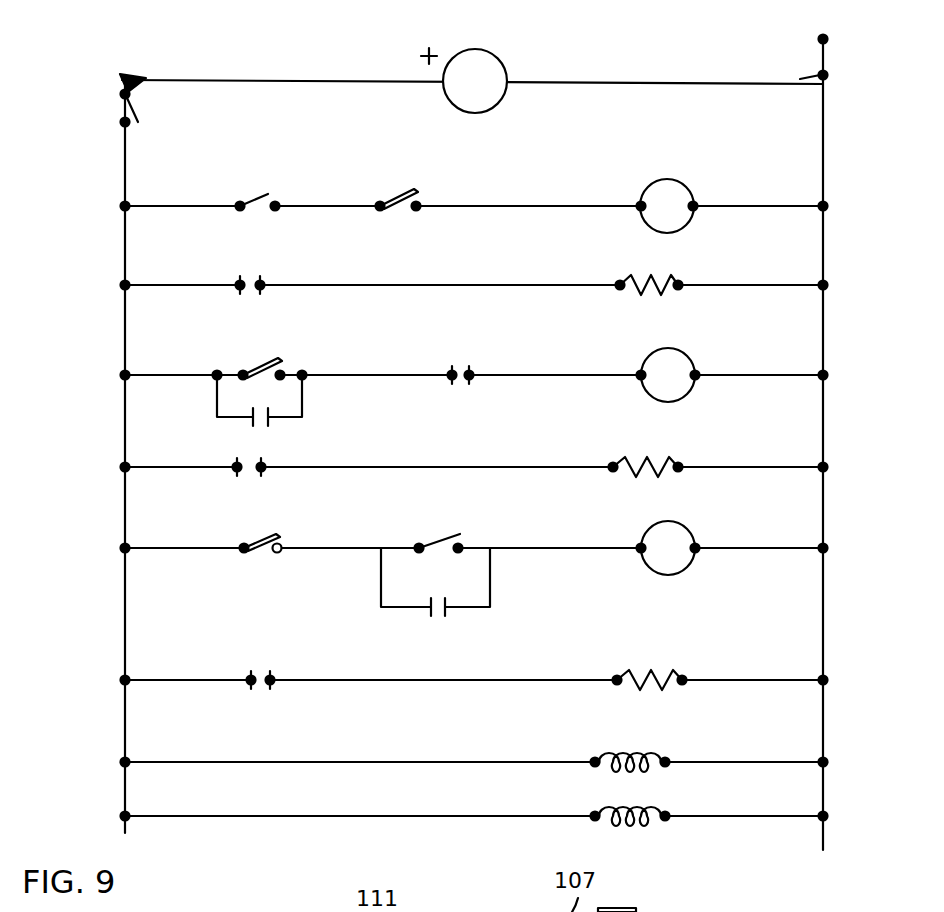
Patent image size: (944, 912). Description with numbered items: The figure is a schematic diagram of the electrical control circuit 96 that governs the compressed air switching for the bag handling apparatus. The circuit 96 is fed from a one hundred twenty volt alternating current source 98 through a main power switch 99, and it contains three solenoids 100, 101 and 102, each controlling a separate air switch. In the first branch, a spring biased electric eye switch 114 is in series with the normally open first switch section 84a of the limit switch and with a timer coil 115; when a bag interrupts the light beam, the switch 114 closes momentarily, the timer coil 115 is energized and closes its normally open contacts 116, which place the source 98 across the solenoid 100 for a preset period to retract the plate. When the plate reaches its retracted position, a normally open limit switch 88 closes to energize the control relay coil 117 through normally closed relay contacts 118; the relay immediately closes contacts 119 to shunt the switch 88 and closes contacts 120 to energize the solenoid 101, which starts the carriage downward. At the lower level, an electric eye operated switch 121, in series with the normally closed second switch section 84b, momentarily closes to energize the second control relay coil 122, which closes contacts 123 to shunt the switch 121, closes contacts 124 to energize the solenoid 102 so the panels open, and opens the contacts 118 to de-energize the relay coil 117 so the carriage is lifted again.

The electrical control circuit 96 is at (846, 110).
The power source 98 is at (488, 50).
The main power switch 99 is at (124, 110).
The electric eye switch 114 is at (250, 198).
The first switch section 84a is at (392, 198).
The timer coil 115 is at (656, 183).
The timer contacts 116 is at (238, 281).
The solenoid 100 is at (622, 282).
The limit switch 88 is at (260, 364).
The relay contacts 119 is at (250, 422).
The normally closed relay contacts 118 is at (444, 384).
The control relay coil 117 is at (648, 357).
The relay contacts 120 is at (263, 466).
The solenoid 101 is at (616, 464).
The second switch section 84b is at (257, 539).
The electric eye operated switch 121 is at (437, 540).
The relay contacts 123 is at (425, 613).
The second control relay coil 122 is at (649, 530).
The relay contacts 124 is at (246, 671).
The solenoid 102 is at (618, 677).